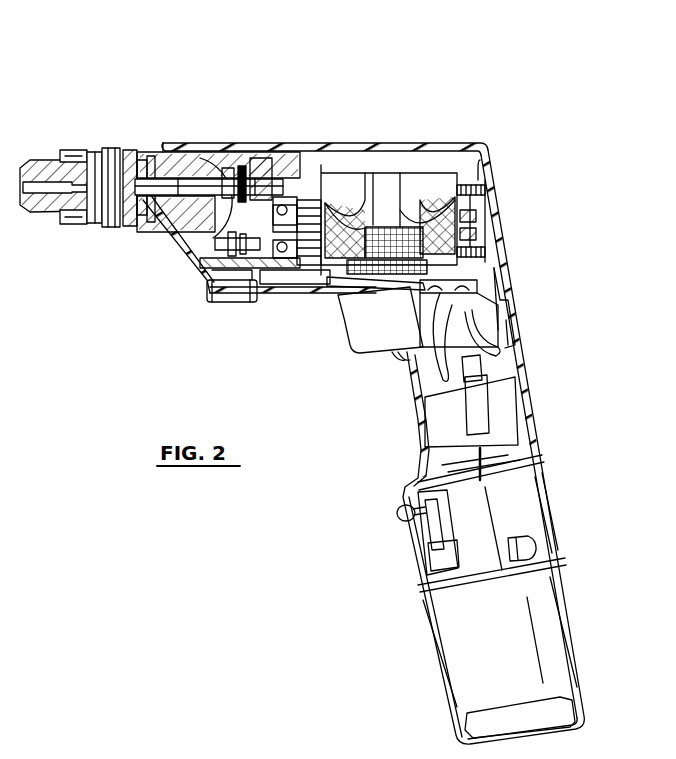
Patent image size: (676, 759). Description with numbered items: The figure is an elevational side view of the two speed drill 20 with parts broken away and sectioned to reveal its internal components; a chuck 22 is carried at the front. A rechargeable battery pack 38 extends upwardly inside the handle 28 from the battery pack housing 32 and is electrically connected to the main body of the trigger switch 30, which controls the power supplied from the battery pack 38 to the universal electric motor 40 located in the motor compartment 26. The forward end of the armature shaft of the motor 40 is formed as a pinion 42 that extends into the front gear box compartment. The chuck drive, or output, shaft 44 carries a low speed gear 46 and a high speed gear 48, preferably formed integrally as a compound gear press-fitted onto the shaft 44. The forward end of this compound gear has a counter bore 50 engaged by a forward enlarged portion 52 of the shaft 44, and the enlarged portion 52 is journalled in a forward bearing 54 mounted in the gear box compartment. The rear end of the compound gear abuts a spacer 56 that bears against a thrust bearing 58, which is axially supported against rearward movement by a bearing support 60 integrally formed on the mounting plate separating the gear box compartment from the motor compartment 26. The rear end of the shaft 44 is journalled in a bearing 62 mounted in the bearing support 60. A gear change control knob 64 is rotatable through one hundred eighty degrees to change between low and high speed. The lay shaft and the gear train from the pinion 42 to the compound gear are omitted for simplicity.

The two speed drill 20 is at (560, 283).
The chuck 22 is at (68, 150).
The motor compartment 26 is at (383, 143).
The handle 28 is at (519, 330).
The trigger switch 30 is at (370, 328).
The battery pack housing 32 is at (562, 643).
The rechargeable battery pack 38 is at (508, 407).
The universal electric motor 40 is at (424, 193).
The pinion 42 is at (268, 296).
The chuck drive shaft 44 is at (197, 165).
The low speed gear 46 is at (175, 215).
The high speed gear 48 is at (190, 238).
The counter bore 50 is at (137, 226).
The forward enlarged portion 52 is at (131, 148).
The forward bearing 54 is at (150, 145).
The spacer 56 is at (228, 162).
The thrust bearing 58 is at (259, 165).
The bearing support 60 is at (277, 160).
The bearing 62 is at (310, 147).
The gear change control knob 64 is at (212, 292).